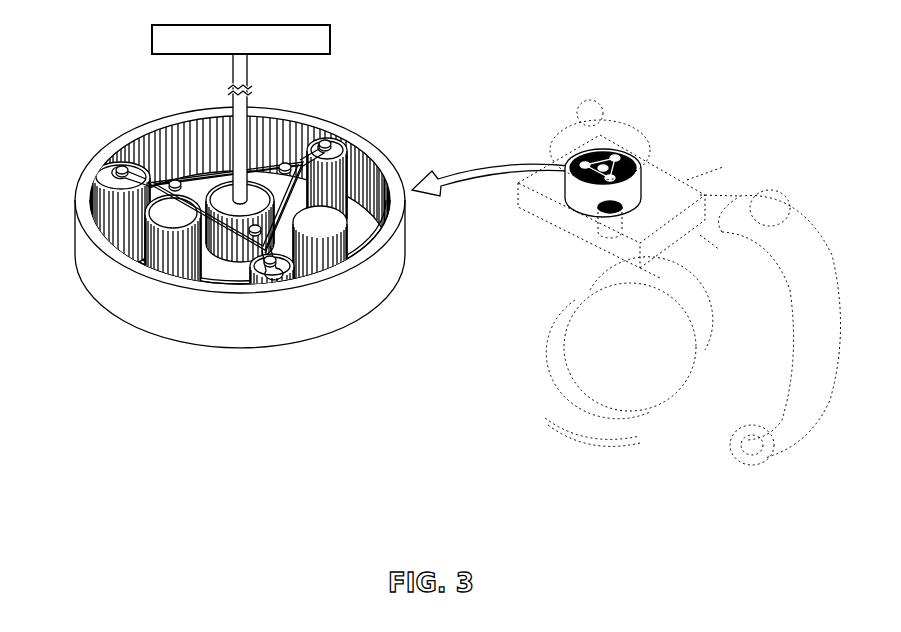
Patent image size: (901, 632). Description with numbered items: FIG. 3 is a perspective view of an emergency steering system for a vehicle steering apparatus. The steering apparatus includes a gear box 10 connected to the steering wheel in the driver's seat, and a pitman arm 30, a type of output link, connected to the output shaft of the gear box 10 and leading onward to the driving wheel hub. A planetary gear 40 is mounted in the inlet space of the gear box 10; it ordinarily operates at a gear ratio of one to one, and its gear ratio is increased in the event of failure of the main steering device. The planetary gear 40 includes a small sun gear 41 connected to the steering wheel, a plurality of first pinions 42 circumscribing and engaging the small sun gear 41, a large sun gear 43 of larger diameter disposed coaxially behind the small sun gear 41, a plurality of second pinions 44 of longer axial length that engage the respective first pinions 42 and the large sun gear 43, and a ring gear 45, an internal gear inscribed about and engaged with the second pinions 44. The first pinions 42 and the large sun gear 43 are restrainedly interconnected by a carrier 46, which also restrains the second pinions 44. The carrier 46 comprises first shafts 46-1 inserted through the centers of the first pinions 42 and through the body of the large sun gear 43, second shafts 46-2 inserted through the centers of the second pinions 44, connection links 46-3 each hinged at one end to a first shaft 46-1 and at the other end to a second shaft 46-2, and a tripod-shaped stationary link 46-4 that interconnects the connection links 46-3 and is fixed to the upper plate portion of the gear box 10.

The gear box 10 is at (542, 313).
The pitman arm 30 is at (802, 392).
The planetary gear 40 is at (210, 228).
The small sun gear 41 is at (253, 185).
The first pinions 42 is at (285, 240).
The large sun gear 43 is at (322, 240).
The second pinions 44 is at (342, 148).
The ring gear 45 is at (88, 268).
The carrier 46 is at (172, 170).
The first shafts 46-1 is at (175, 187).
The second shafts 46-2 is at (140, 178).
The connection links 46-3 is at (122, 173).
The stationary link 46-4 is at (203, 152).